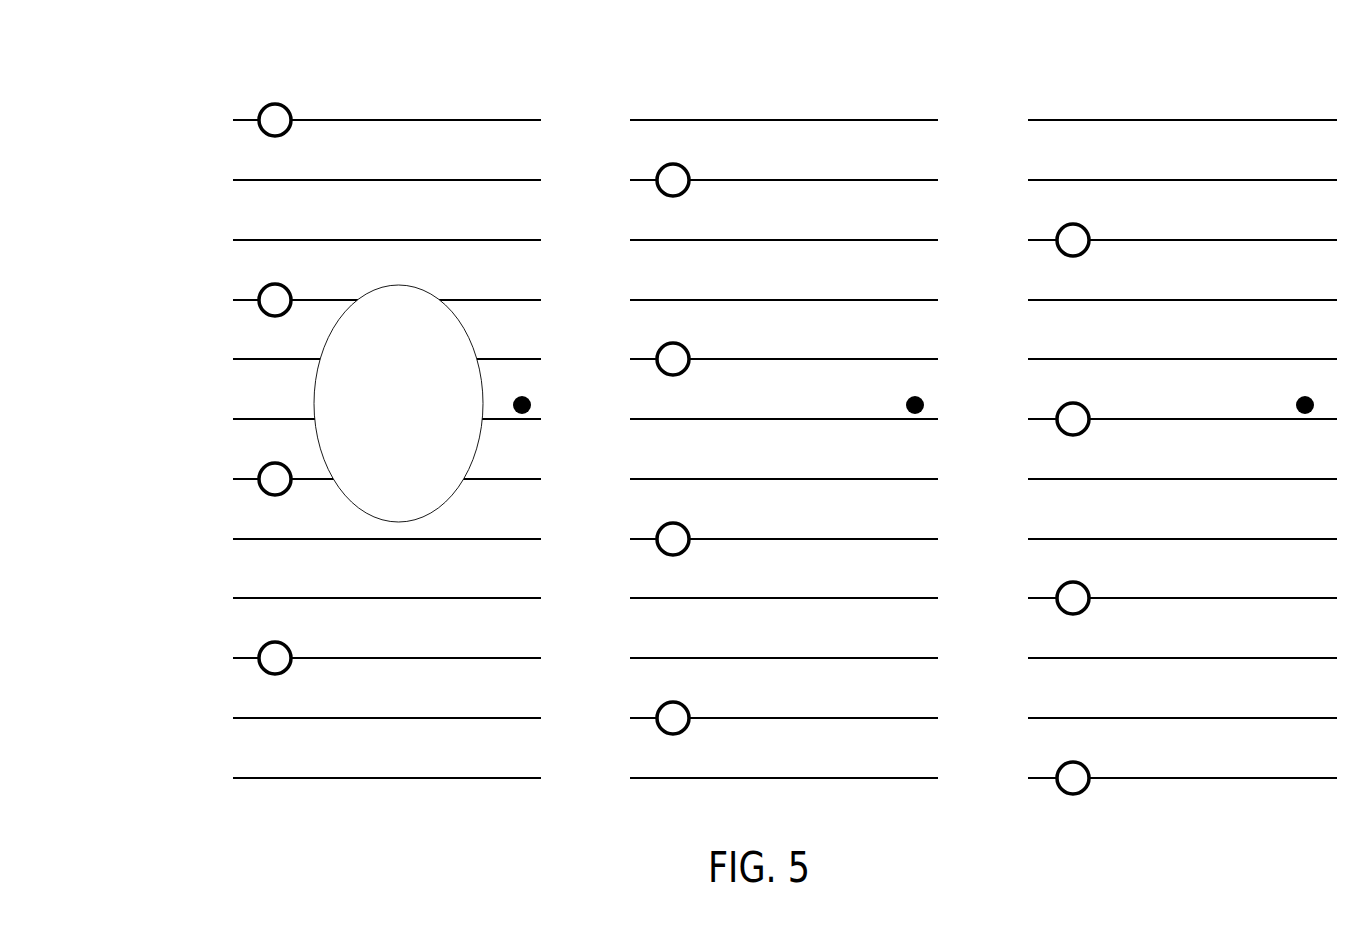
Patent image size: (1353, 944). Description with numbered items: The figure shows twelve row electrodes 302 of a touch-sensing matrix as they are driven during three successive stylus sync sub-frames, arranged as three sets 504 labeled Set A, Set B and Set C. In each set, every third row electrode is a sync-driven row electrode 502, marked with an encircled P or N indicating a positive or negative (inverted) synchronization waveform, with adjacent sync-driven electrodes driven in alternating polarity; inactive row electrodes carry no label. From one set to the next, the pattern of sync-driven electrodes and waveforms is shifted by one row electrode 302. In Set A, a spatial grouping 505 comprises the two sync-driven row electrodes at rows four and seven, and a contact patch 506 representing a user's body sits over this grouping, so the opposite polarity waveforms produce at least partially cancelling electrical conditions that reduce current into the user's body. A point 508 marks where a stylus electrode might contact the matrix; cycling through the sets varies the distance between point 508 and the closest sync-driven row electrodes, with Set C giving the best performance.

The row electrodes 302 is at (311, 143).
The sync-driven row electrode 502 is at (180, 119).
The sets of sync-driven row electrodes 504 is at (709, 416).
The spatial grouping 505 is at (176, 303).
The contact patch 506 is at (416, 414).
The point 508 is at (528, 381).